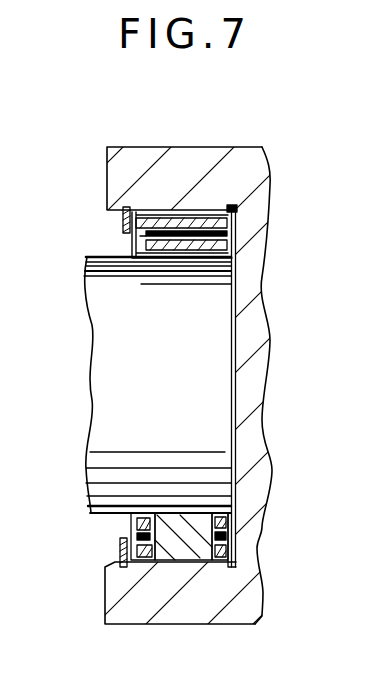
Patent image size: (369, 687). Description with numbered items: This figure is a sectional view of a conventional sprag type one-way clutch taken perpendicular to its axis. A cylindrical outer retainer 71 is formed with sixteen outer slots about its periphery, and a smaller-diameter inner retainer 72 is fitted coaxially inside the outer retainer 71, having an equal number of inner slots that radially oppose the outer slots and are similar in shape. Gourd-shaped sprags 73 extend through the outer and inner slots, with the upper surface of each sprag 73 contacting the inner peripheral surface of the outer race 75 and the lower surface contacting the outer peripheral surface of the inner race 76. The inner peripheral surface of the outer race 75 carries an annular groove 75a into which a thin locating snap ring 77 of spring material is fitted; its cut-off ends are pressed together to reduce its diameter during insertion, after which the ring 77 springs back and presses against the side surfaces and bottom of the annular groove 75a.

The outer retainer 71 is at (236, 203).
The inner retainer 72 is at (237, 248).
The sprag 73 is at (187, 558).
The outer race 75 is at (165, 148).
The annular groove 75a is at (122, 212).
The inner race 76 is at (100, 352).
The locating snap ring 77 is at (128, 233).